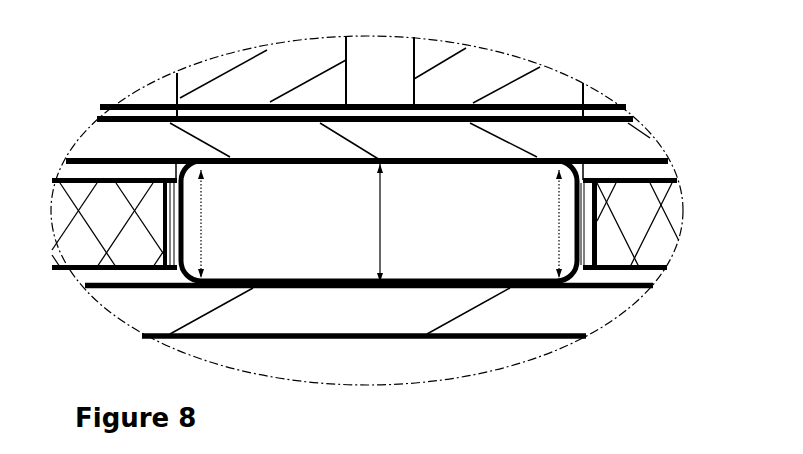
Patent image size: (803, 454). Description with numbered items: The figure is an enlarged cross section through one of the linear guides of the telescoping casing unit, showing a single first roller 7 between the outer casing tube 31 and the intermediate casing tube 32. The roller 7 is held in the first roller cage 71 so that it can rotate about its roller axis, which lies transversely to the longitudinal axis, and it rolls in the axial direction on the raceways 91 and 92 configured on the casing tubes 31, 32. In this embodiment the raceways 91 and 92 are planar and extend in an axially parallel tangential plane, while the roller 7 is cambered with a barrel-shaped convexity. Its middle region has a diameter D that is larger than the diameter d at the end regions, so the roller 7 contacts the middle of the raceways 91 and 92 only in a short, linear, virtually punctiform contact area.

The first roller 7 is at (455, 203).
The outer casing tube 31 is at (527, 140).
The intermediate casing tube 32 is at (517, 312).
The first roller cage 71 is at (633, 220).
The first raceway 91 is at (258, 158).
The first raceway 92 is at (287, 288).
The middle-region diameter D is at (380, 233).
The end-region diameter d is at (200, 217).